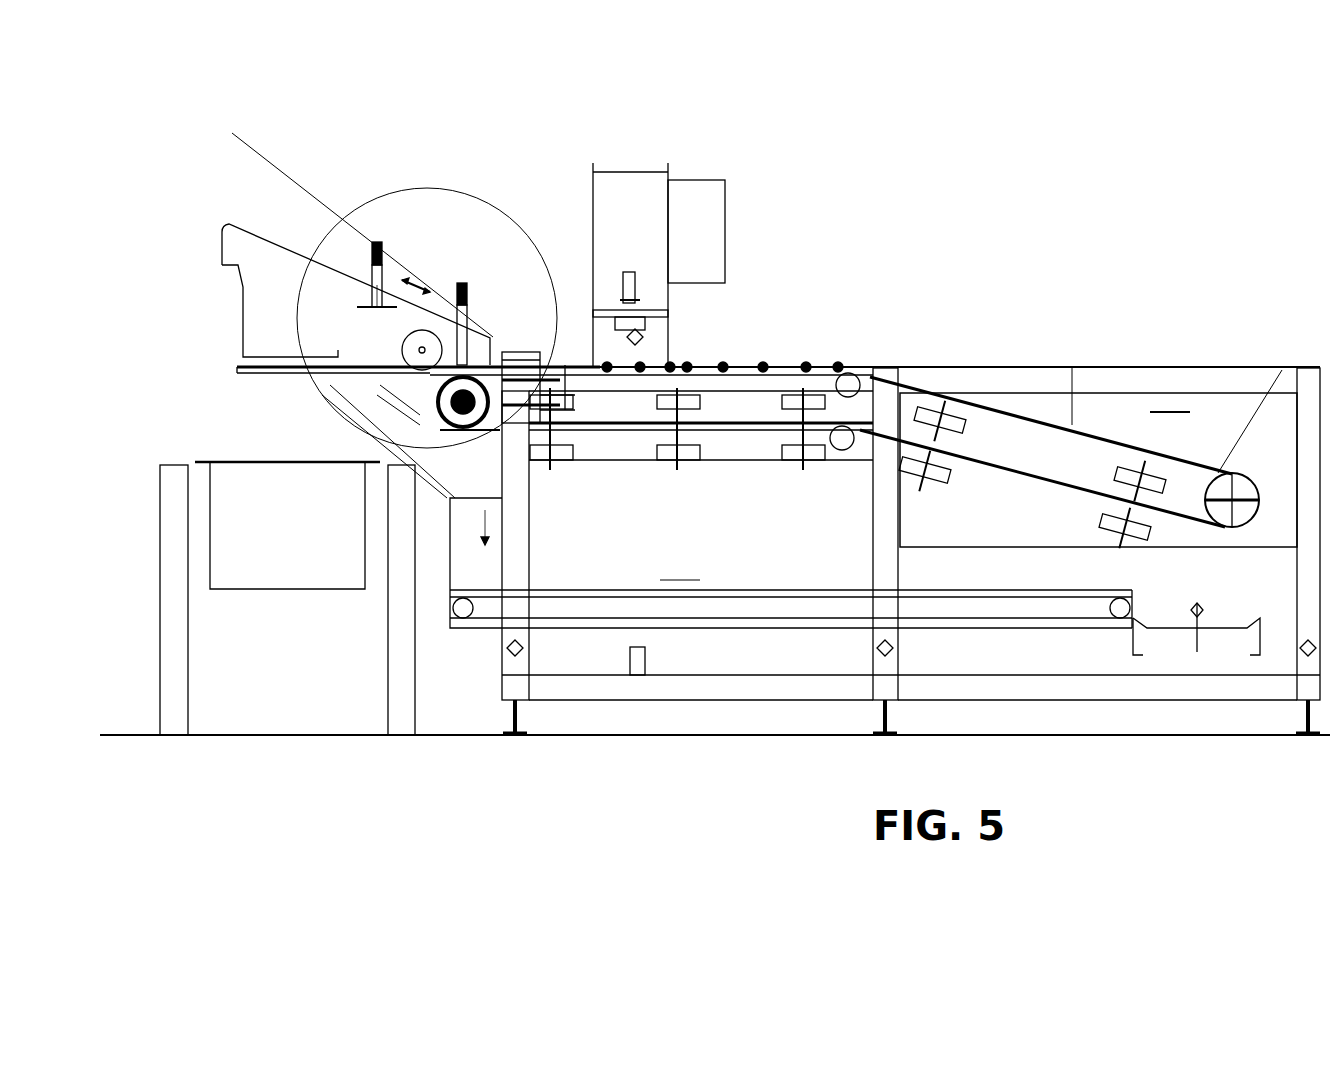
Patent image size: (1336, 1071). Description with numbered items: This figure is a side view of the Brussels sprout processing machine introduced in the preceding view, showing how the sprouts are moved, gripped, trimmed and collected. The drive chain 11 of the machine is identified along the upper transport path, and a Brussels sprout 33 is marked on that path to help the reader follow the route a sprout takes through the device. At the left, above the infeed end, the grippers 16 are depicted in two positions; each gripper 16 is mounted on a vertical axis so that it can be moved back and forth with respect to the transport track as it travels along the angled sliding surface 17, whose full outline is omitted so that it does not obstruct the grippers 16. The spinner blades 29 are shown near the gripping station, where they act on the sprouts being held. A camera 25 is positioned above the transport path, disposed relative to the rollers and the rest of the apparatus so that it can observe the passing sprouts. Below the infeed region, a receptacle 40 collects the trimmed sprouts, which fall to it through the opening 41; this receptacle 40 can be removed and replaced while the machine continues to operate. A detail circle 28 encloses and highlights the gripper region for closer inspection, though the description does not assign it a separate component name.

The drive chain 11 is at (1078, 436).
The gripper 16 is at (371, 287).
The sliding surface 17 is at (332, 282).
The camera 25 is at (659, 232).
The detail view 28 is at (340, 220).
The spinner blades 29 is at (405, 336).
The Brussels sprout 33 is at (875, 331).
The receptacle 40 is at (287, 579).
The opening 41 is at (335, 384).